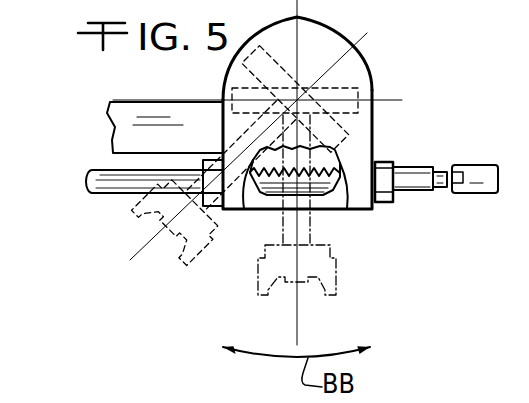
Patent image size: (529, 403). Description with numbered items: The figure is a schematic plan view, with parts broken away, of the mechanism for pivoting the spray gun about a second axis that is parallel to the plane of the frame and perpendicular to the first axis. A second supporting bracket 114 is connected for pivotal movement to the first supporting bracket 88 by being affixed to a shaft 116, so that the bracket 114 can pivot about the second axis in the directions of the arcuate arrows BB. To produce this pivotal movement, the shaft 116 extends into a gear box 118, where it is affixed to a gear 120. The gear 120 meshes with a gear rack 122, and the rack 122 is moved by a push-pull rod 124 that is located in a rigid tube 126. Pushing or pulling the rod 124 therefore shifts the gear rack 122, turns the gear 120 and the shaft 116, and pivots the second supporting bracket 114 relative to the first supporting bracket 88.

The first supporting bracket 88 is at (148, 101).
The second supporting bracket 114 is at (374, 84).
The shaft 116 is at (303, 88).
The gear box 118 is at (375, 117).
The gear 120 is at (347, 209).
The gear rack 122 is at (244, 209).
The push-pull rod 124 is at (437, 186).
The rigid tube 126 is at (427, 164).